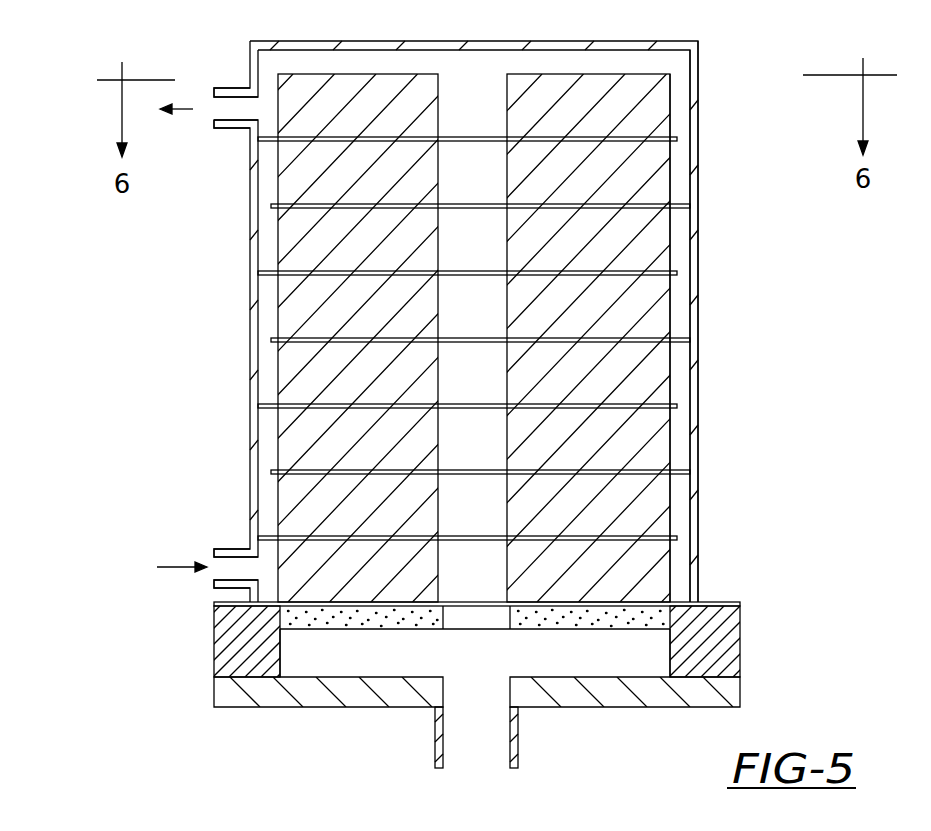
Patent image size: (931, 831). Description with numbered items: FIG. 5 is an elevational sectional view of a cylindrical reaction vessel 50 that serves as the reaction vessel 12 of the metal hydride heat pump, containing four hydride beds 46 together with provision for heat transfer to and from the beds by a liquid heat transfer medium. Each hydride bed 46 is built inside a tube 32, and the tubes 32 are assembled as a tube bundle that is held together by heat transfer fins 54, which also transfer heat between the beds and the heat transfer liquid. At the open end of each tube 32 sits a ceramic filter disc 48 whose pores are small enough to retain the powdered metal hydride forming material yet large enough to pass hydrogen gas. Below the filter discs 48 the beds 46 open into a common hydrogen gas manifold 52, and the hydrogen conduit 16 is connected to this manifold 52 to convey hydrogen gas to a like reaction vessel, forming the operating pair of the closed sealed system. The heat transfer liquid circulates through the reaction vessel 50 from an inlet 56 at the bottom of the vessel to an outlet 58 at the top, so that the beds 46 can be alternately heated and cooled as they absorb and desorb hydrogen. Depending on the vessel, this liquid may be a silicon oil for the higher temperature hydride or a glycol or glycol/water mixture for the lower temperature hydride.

The reaction vessel 12 is at (705, 220).
The hydrogen conduit 16 is at (518, 747).
The tube 32 is at (670, 440).
The hydride bed 46 is at (311, 233).
The filter disc 48 is at (590, 613).
The cylindrical reaction vessel 50 is at (698, 323).
The common hydrogen gas manifold 52 is at (353, 645).
The heat transfer fins 54 is at (607, 137).
The inlet 56 is at (228, 549).
The outlet 58 is at (240, 88).